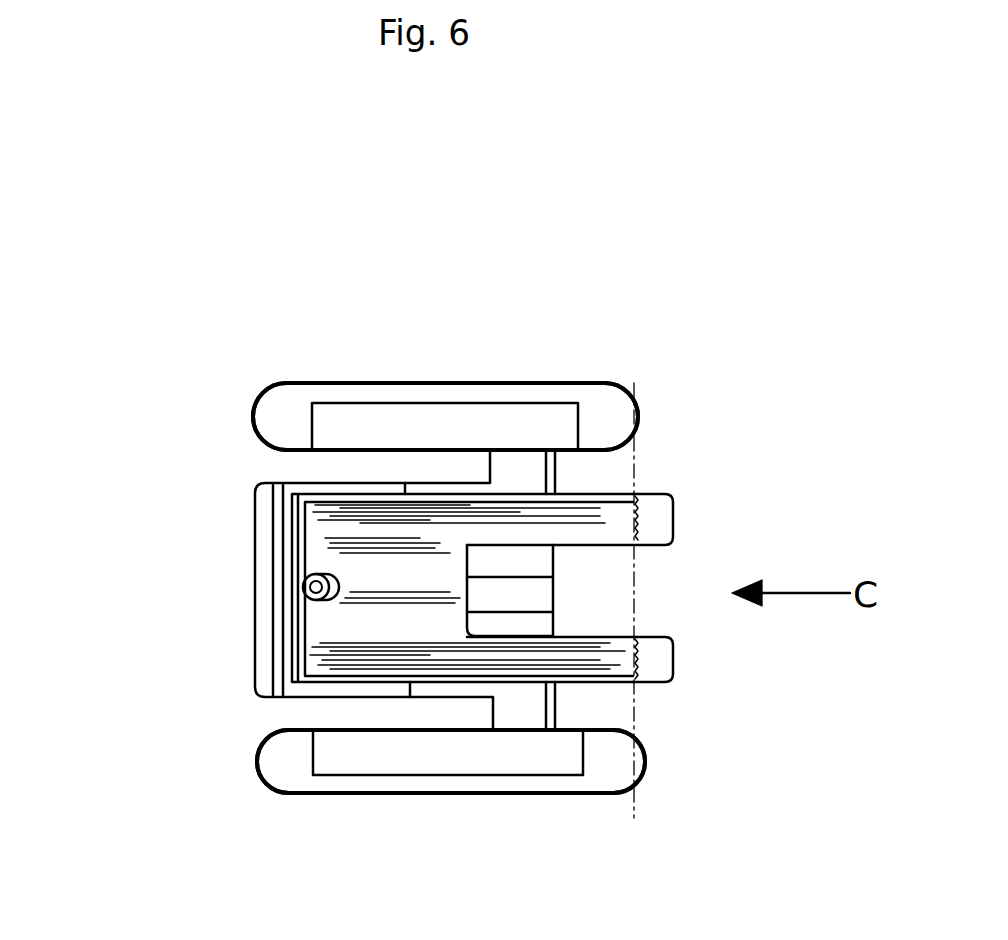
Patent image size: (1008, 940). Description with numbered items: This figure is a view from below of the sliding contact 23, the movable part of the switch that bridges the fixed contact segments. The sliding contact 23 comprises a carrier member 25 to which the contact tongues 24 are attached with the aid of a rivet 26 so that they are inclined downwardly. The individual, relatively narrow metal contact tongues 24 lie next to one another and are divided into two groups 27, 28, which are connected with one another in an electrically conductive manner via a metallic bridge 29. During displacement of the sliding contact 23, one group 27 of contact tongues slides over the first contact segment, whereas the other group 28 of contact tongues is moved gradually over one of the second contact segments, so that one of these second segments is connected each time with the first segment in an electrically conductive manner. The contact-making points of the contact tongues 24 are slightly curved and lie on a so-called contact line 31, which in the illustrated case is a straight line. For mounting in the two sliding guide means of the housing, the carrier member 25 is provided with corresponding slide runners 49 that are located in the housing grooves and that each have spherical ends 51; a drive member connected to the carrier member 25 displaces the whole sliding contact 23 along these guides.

The sliding contact 23 is at (460, 375).
The contact tongues 24 is at (647, 490).
The carrier member 25 is at (267, 660).
The rivet 26 is at (314, 585).
The first group of contact tongues 27 is at (652, 528).
The second group of contact tongues 28 is at (665, 673).
The metallic bridge 29 is at (405, 575).
The contact line 31 is at (636, 390).
The slide runners 49 is at (362, 430).
The spherical ends 51 is at (277, 385).